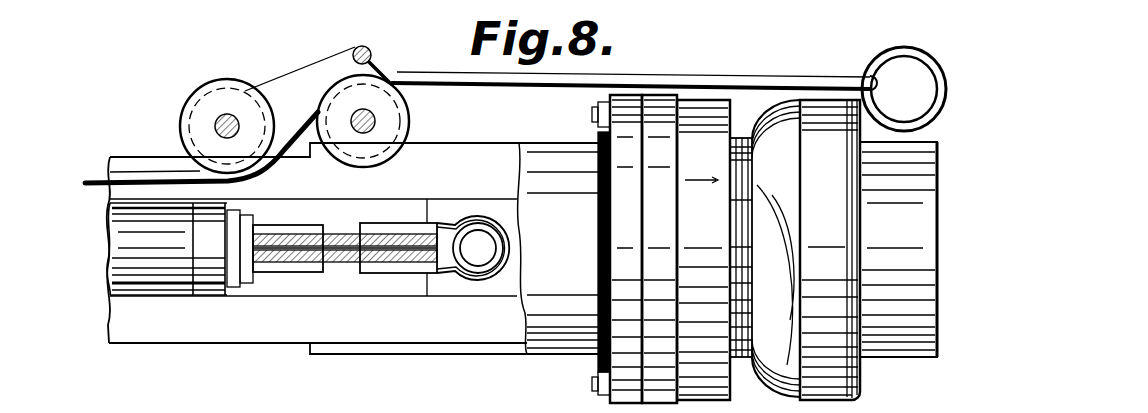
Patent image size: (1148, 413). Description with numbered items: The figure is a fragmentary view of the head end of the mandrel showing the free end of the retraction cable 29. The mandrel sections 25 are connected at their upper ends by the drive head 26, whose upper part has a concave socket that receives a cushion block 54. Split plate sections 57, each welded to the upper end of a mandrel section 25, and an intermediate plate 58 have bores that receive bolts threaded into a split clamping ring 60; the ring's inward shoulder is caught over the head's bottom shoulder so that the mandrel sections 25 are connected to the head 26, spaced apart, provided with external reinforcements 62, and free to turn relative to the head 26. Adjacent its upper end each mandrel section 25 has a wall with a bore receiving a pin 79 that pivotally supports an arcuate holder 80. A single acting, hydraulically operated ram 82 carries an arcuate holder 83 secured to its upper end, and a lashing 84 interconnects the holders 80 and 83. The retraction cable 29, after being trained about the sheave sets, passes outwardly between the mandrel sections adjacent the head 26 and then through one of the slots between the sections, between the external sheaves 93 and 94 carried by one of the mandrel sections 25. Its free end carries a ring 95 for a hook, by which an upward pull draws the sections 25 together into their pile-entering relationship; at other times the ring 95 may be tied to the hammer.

The mandrel section 25 is at (208, 343).
The drive head 26 is at (810, 110).
The retraction cable 29 is at (135, 172).
The cushion block 54 is at (914, 340).
The split plate section 57 is at (627, 110).
The intermediate plate 58 is at (663, 100).
The split clamping ring 60 is at (707, 117).
The external reinforcement 62 is at (560, 328).
The pin 79 is at (473, 242).
The arcuate holder 80 is at (407, 273).
The hydraulically operated ram 82 is at (152, 292).
The arcuate holder 83 is at (296, 275).
The lashing 84 is at (347, 268).
The external sheave 93 is at (214, 90).
The external sheave 94 is at (388, 82).
The ring 95 is at (896, 50).